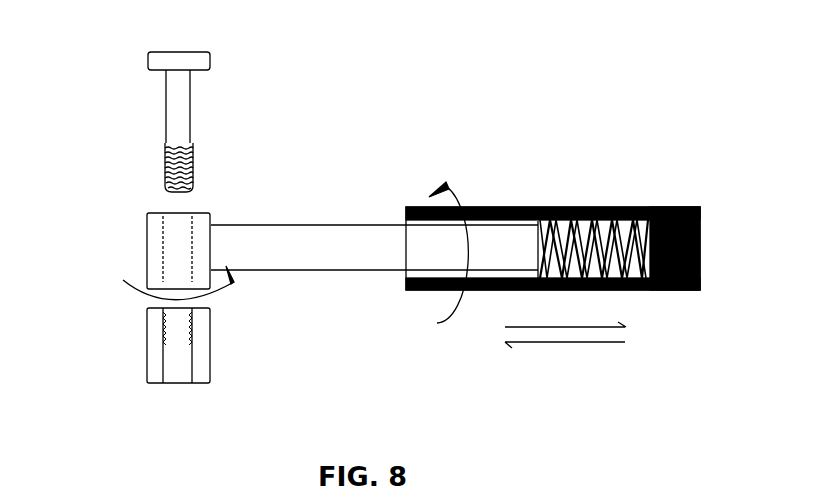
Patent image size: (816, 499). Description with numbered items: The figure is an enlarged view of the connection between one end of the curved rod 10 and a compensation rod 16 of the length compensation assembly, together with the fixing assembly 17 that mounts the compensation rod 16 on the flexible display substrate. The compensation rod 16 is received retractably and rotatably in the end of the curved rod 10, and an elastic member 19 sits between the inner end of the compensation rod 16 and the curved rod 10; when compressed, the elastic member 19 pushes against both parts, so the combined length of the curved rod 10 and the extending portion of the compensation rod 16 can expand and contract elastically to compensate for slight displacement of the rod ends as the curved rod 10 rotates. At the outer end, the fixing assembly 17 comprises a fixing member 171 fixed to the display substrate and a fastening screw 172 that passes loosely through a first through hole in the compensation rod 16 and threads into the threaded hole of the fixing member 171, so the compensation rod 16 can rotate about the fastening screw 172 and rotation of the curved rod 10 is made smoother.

The curved rod 10 is at (667, 208).
The compensation rod 16 is at (340, 238).
The fixing assembly 17 is at (130, 238).
The fixing member 171 is at (188, 332).
The fastening screw 172 is at (180, 93).
The elastic member 19 is at (567, 208).